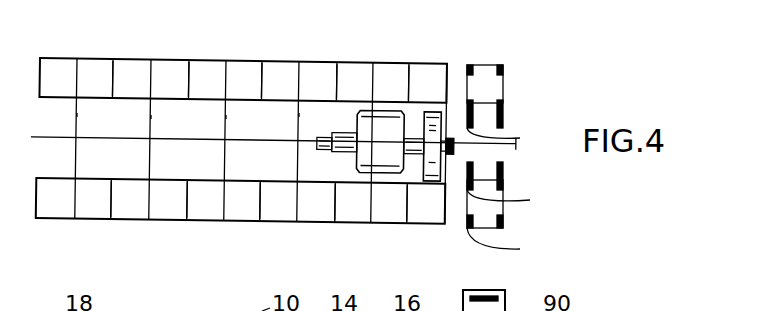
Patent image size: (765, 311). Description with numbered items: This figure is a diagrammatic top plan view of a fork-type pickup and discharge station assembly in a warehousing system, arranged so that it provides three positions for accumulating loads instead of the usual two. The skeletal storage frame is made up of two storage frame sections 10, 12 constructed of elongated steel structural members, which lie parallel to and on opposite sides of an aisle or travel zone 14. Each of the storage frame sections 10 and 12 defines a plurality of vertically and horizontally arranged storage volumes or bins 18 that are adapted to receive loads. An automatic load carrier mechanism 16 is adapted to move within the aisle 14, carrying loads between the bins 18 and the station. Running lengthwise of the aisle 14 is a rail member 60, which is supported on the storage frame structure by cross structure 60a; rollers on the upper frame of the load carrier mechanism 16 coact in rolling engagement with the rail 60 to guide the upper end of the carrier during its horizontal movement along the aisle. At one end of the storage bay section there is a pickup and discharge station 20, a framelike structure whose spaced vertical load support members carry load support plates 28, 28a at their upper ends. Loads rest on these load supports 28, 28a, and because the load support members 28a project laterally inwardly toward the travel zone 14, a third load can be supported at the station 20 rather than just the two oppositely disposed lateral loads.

The storage frame section 10 is at (343, 63).
The storage frame section 12 is at (357, 224).
The aisle 14 is at (277, 168).
The load carrier mechanism 16 is at (413, 116).
The storage bins 18 is at (98, 64).
The pickup and discharge station 20 is at (495, 89).
The load support plate 28 is at (503, 65).
The load support plate 28a is at (503, 115).
The rail member 60 is at (55, 139).
The cross structure 60a is at (77, 115).